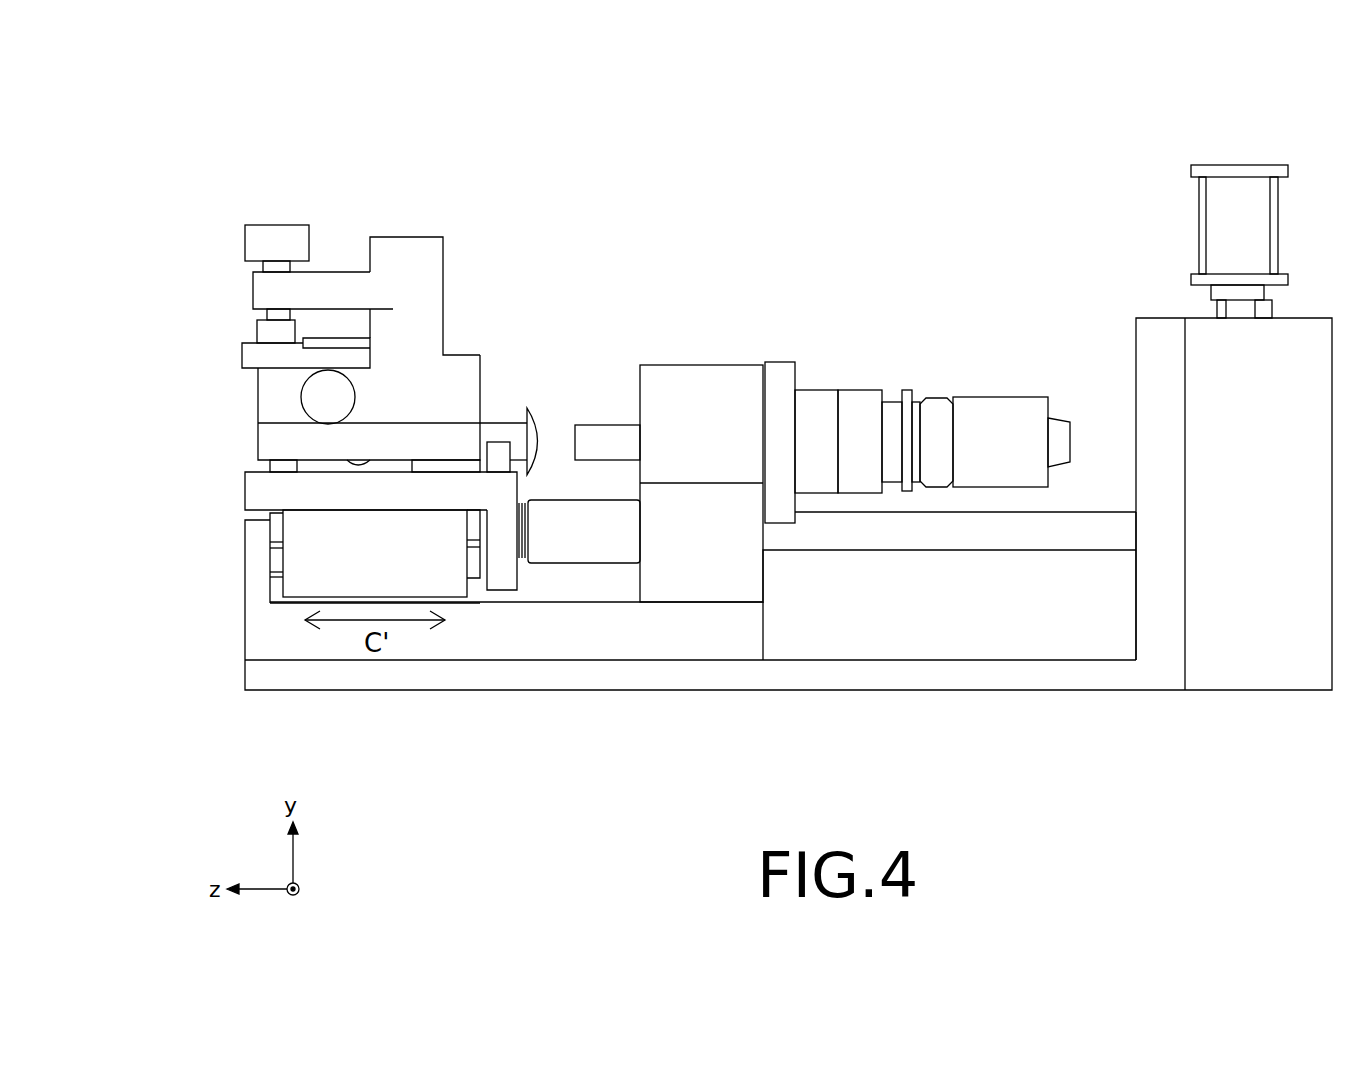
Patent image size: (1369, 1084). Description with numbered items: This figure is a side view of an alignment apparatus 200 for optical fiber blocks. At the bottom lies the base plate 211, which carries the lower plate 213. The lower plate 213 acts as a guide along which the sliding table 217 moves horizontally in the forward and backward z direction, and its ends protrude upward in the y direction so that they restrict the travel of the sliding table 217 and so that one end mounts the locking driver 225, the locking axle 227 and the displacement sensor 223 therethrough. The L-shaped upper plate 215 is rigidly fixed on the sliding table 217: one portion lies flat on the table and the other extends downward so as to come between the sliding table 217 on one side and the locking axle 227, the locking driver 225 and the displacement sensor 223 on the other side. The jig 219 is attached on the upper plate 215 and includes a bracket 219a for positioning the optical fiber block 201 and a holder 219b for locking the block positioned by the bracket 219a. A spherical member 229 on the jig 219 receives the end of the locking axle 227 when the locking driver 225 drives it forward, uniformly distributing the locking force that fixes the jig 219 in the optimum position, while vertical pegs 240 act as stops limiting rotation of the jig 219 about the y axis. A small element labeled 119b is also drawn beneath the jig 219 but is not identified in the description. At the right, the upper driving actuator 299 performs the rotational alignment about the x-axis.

The alignment apparatus 200 is at (745, 180).
The base plate 211 is at (1028, 673).
The lower plate 213 is at (748, 635).
The upper plate 215 is at (275, 492).
The sliding table 217 is at (308, 573).
The jig 219 is at (453, 206).
The bracket 219a is at (280, 360).
The holder 219b is at (268, 292).
The optical fiber block 201 is at (250, 357).
The slider 119b is at (270, 467).
The displacement sensor 223 is at (578, 545).
The locking driver 225 is at (988, 407).
The locking axle 227 is at (603, 433).
The spherical member 229 is at (535, 433).
The vertical pegs 240 is at (500, 443).
The upper driving actuator 299 is at (1215, 210).